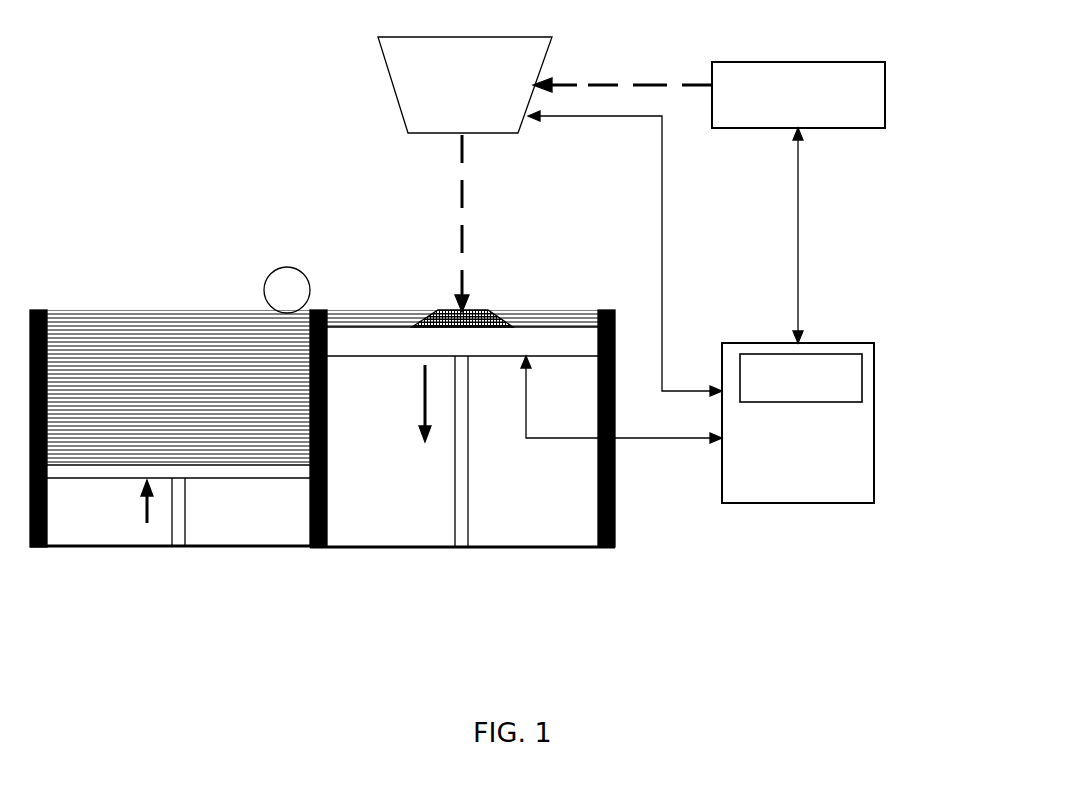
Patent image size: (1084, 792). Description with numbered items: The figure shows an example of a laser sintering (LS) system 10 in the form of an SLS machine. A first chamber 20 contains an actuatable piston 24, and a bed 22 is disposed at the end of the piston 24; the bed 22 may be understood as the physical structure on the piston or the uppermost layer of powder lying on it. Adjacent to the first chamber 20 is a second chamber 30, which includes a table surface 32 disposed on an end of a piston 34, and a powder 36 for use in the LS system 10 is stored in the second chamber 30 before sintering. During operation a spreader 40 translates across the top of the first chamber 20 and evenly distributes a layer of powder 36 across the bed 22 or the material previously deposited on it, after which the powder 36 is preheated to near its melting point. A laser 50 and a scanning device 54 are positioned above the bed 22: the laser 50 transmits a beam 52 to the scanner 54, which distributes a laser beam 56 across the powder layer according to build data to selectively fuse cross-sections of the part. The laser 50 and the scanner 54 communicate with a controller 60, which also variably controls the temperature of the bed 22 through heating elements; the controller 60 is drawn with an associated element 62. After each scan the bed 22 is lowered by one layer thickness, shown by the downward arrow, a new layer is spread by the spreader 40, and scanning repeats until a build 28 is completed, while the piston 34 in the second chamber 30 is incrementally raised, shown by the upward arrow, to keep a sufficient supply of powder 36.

The LS system 10 is at (252, 86).
The first chamber 20 is at (388, 512).
The bed 22 is at (361, 345).
The piston 24 is at (470, 520).
The build 28 is at (440, 308).
The second chamber 30 is at (97, 528).
The table surface 32 is at (252, 470).
The piston 34 is at (185, 515).
The powder 36 is at (97, 323).
The spreader 40 is at (265, 275).
The laser 50 is at (858, 62).
The beam 52 is at (600, 83).
The scanning device 54 is at (468, 37).
The laser beam 56 is at (463, 237).
The controller 60 is at (835, 343).
The display / memory 62 is at (838, 392).